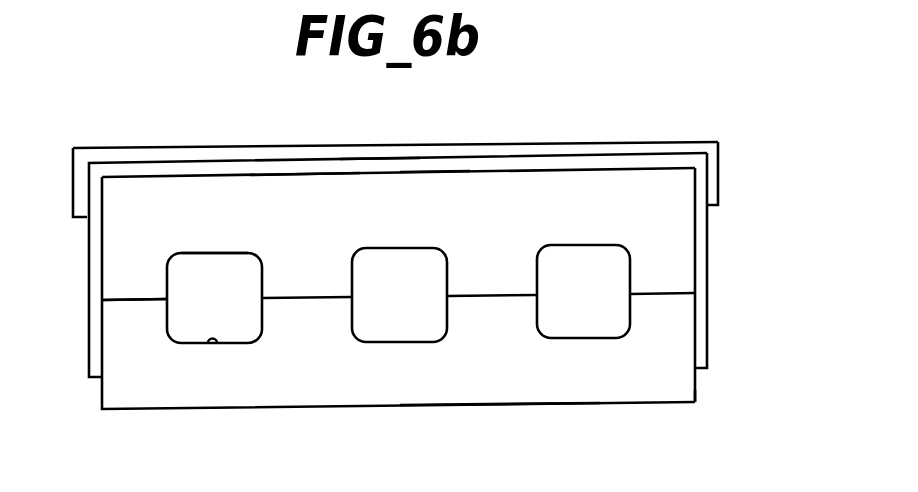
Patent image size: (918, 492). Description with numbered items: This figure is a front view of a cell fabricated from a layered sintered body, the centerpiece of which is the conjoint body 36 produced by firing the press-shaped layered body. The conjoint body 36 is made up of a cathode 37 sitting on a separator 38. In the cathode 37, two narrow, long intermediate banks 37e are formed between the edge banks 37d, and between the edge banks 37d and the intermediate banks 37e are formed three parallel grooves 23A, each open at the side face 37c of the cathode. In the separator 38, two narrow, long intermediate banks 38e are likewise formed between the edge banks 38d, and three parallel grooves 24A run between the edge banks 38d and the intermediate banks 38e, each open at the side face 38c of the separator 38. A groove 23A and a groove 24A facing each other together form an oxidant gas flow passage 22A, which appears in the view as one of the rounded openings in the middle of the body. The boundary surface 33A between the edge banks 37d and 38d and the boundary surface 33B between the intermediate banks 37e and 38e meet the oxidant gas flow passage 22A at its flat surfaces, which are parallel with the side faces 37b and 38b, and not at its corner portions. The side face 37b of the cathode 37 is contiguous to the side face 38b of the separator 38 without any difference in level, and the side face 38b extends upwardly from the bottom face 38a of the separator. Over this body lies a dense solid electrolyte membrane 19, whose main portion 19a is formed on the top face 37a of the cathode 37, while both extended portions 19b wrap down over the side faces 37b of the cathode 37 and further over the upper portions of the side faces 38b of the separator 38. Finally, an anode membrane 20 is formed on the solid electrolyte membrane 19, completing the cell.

The dense solid electrolyte membrane 19 is at (364, 167).
The main portion of the solid electrolyte membrane 19a is at (592, 160).
The extended portions of the solid electrolyte membrane 19b is at (707, 268).
The anode membrane 20 is at (512, 148).
The oxidant gas flow passage 22A is at (238, 315).
The groove 23A is at (213, 257).
The groove 24A is at (215, 343).
The boundary surface 33A is at (142, 303).
The boundary surface 33B is at (317, 298).
The conjoint body 36 is at (697, 173).
The cathode 37 is at (687, 152).
The top face of the cathode 37a is at (423, 173).
The side face of the cathode 37b is at (707, 198).
The side face of the cathode 37c is at (303, 200).
The edge banks of the cathode 37d is at (125, 285).
The intermediate banks of the cathode 37e is at (477, 282).
The separator 38 is at (697, 333).
The bottom face of the separator 38a is at (508, 405).
The side face of the separator 38b is at (697, 381).
The side face of the separator 38c is at (573, 377).
The edge banks of the separator 38d is at (650, 303).
The intermediate banks of the separator 38e is at (507, 305).